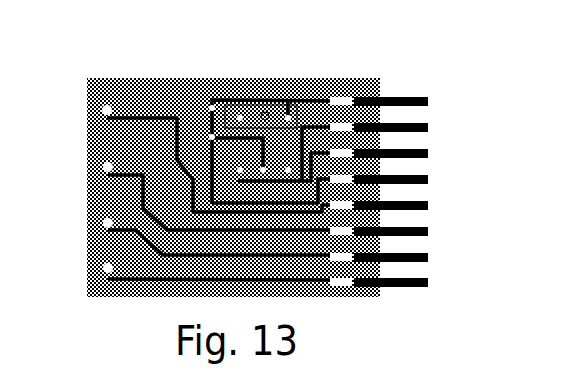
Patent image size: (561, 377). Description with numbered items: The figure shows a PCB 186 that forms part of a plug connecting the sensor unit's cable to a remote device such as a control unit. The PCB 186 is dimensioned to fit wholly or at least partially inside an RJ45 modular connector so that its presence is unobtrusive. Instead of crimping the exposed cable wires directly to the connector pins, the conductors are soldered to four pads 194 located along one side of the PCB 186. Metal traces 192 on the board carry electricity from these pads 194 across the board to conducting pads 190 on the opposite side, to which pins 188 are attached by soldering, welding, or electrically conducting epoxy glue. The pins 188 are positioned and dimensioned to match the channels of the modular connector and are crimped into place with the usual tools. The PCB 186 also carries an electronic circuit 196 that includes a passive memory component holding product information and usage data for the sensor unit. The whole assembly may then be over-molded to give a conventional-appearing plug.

The PCB 186 is at (244, 148).
The pins 188 is at (412, 90).
The conducting pads 190 is at (357, 78).
The conductive trace 192 is at (170, 103).
The pads 194 is at (88, 102).
The electronic circuit 196 is at (293, 92).